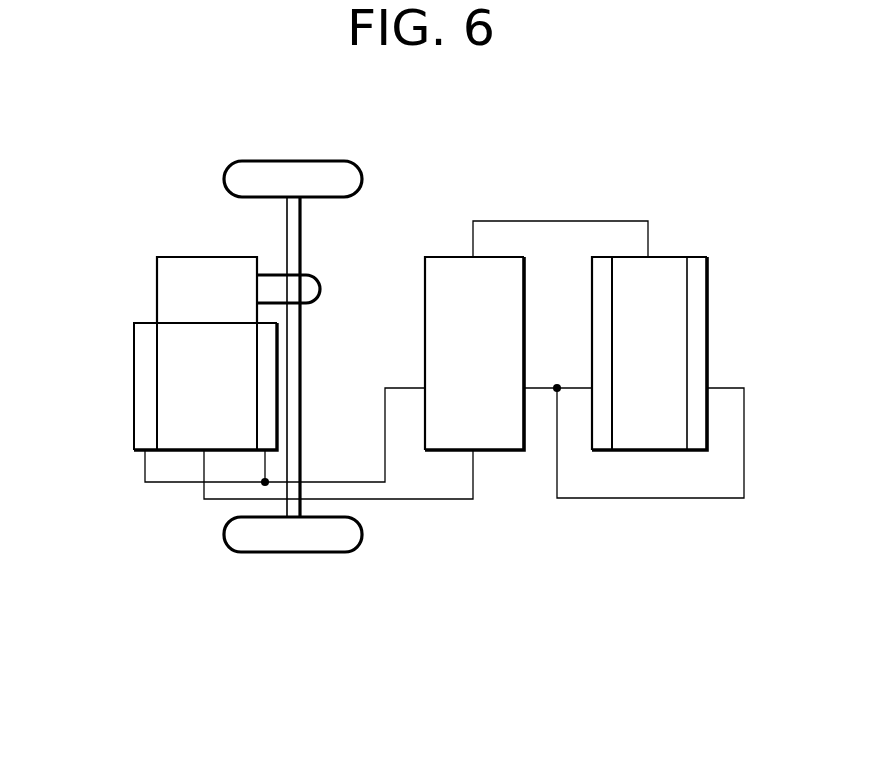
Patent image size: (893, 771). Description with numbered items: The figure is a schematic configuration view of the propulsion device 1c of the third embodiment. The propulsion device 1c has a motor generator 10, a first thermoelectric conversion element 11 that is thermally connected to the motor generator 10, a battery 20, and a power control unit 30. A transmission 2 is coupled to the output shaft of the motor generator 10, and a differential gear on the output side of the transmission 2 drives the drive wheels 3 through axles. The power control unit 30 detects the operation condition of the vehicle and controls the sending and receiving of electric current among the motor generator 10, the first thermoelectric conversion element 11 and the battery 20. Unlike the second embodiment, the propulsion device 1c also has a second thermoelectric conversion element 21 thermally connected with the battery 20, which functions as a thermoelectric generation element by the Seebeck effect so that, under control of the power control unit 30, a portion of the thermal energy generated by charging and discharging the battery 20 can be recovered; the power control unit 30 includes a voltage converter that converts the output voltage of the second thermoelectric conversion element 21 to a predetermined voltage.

The propulsion device 1c is at (433, 595).
The transmission 2 is at (178, 277).
The drive wheels 3 is at (269, 172).
The motor generator 10 is at (177, 430).
The first thermoelectric conversion element 11 is at (268, 368).
The battery 20 is at (649, 433).
The second thermoelectric conversion element 21 is at (697, 267).
The power control unit 30 is at (498, 438).